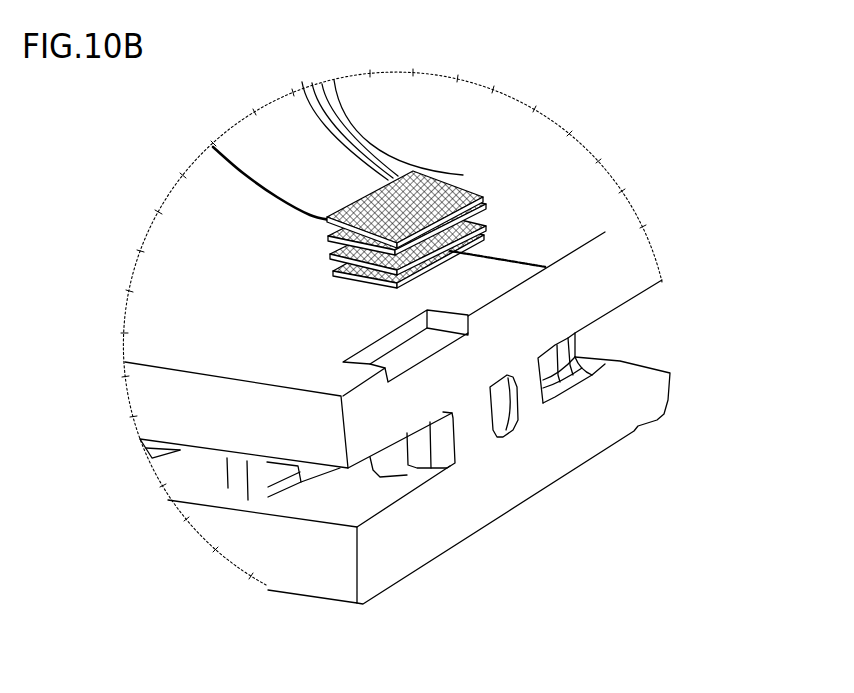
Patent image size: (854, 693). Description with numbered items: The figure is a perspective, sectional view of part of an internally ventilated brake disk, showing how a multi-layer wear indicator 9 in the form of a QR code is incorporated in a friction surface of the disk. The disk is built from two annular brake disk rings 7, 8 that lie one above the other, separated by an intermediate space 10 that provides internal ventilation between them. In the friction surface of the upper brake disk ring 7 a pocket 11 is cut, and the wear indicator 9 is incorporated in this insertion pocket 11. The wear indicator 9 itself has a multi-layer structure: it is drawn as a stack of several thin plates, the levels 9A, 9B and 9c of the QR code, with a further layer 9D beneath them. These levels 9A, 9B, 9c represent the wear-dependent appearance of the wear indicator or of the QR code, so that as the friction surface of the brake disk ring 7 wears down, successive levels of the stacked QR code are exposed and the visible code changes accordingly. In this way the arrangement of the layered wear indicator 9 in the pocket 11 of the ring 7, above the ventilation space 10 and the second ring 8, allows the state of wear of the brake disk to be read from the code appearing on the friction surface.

The brake disk ring 7 is at (640, 262).
The brake disk ring 8 is at (630, 418).
The wear indicator, QR code 9 is at (520, 180).
The wear-dependent level of the wear indicator or QR code 9A is at (464, 144).
The wear-dependent level of the wear indicator or QR code 9B is at (495, 213).
The wear-dependent level of the wear indicator or QR code 9c is at (486, 223).
The fourth layer 9D is at (603, 232).
The intermediate space for internal ventilation 10 is at (610, 337).
The insertion pocket 11 is at (418, 353).